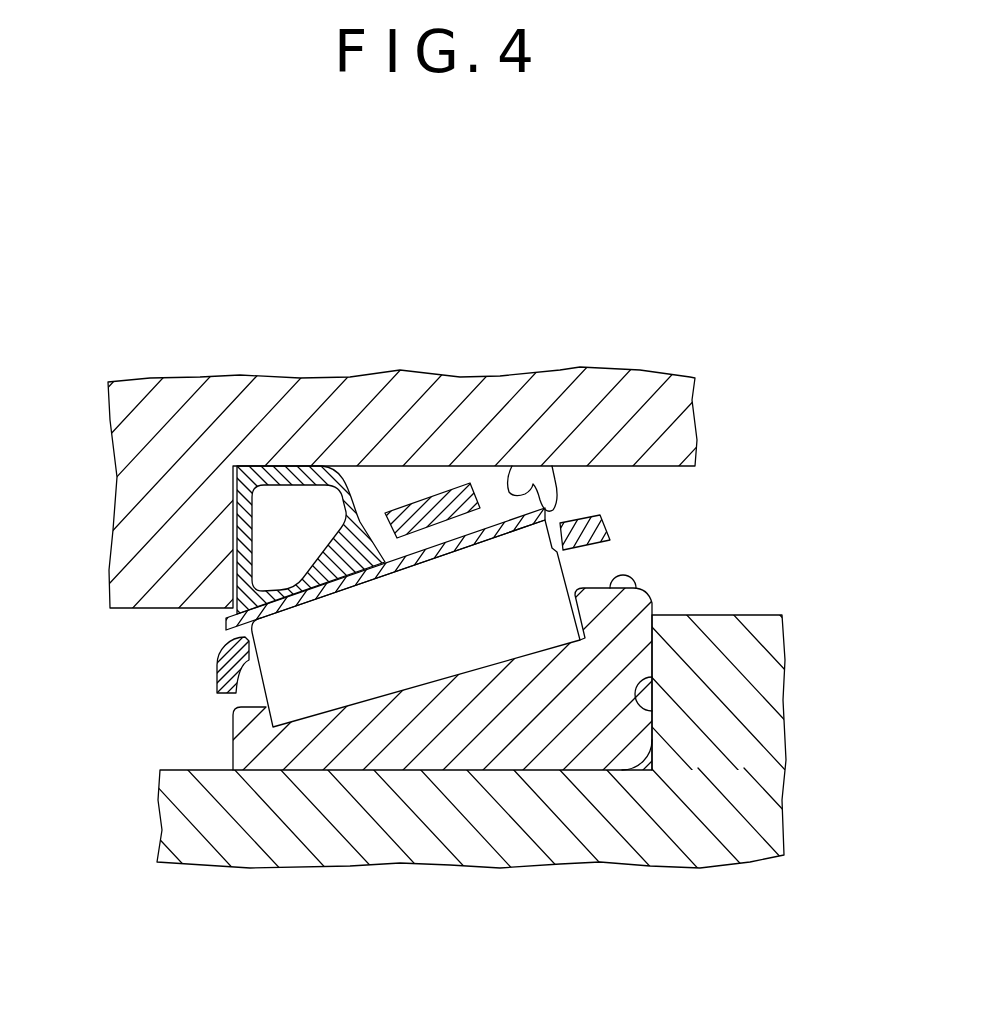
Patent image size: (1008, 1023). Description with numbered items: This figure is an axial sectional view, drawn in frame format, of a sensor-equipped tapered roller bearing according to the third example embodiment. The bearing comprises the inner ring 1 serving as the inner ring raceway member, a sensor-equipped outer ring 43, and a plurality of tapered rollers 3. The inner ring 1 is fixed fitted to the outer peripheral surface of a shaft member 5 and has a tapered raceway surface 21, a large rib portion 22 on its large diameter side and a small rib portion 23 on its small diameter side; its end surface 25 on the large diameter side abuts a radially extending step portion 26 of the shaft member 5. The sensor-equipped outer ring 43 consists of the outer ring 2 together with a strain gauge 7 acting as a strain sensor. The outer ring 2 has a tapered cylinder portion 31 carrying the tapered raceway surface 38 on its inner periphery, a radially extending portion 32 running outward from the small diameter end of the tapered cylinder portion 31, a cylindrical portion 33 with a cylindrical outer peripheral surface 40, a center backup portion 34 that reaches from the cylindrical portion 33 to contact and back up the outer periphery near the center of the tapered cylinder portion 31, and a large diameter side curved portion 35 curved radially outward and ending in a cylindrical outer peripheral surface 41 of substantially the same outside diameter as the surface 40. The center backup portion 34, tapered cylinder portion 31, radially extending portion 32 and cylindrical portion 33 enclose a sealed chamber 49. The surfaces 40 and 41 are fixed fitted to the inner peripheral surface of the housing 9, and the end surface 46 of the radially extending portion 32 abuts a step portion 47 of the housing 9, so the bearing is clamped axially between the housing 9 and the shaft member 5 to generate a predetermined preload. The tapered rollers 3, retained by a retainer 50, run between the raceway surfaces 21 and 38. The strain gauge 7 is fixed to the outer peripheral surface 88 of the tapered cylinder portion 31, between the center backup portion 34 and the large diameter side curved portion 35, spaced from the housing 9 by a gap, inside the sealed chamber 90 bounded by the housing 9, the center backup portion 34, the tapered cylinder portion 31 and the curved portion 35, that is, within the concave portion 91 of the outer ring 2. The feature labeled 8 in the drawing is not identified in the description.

The inner ring 1 is at (434, 748).
The outer ring 2 is at (381, 477).
The tapered rollers 3 is at (416, 720).
The shaft member 5 is at (509, 774).
The strain gauge 7 is at (430, 432).
The projection 8 is at (521, 372).
The housing 9 is at (455, 453).
The tapered raceway surface 21 is at (434, 795).
The large rib portion 22 is at (621, 756).
The small rib portion 23 is at (230, 773).
The end surface 25 is at (741, 666).
The step portion 26 is at (739, 722).
The tapered cylinder portion 31 is at (412, 424).
The radially extending portion 32 is at (300, 542).
The cylindrical portion 33 is at (310, 390).
The center backup portion 34 is at (362, 402).
The large diameter side curved portion 35 is at (600, 372).
The tapered raceway surface 38 is at (374, 747).
The cylindrical outer peripheral surface 40 is at (276, 390).
The cylindrical outer peripheral surface 41 is at (553, 386).
The sensor-equipped outer ring 43 is at (393, 378).
The end surface 46 is at (152, 582).
The step portion 47 is at (143, 464).
The sealed chamber 49 is at (148, 626).
The retainer 50 is at (608, 533).
The outer peripheral surface 88 is at (488, 372).
The sealed chamber 90 is at (580, 488).
The concave portion 91 is at (243, 625).